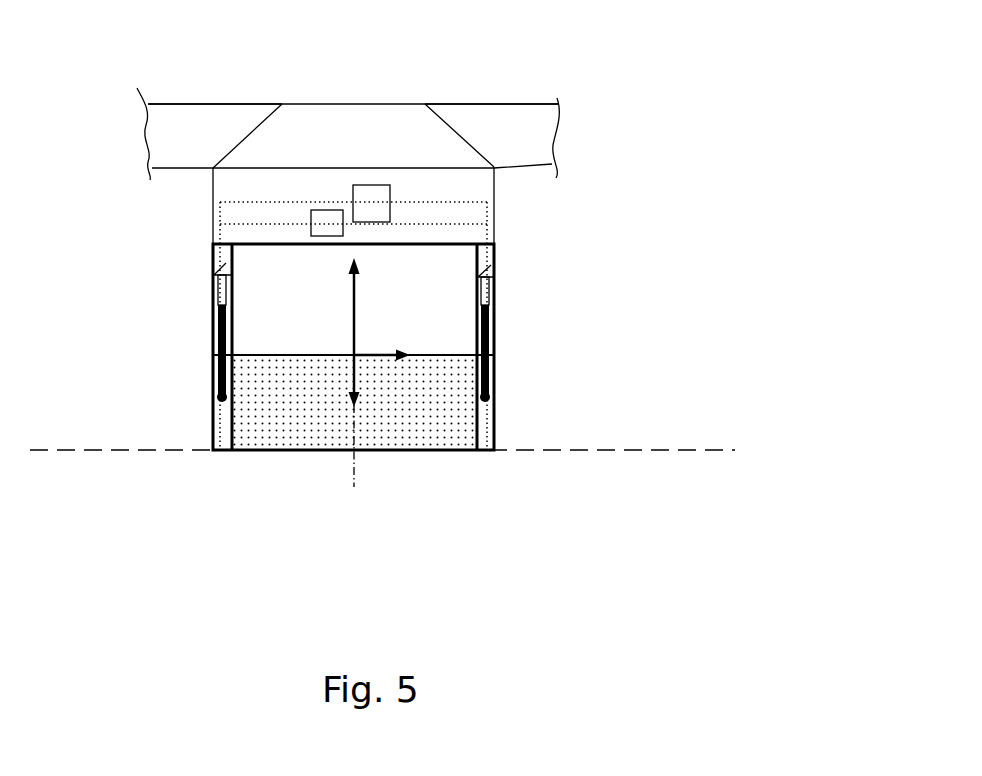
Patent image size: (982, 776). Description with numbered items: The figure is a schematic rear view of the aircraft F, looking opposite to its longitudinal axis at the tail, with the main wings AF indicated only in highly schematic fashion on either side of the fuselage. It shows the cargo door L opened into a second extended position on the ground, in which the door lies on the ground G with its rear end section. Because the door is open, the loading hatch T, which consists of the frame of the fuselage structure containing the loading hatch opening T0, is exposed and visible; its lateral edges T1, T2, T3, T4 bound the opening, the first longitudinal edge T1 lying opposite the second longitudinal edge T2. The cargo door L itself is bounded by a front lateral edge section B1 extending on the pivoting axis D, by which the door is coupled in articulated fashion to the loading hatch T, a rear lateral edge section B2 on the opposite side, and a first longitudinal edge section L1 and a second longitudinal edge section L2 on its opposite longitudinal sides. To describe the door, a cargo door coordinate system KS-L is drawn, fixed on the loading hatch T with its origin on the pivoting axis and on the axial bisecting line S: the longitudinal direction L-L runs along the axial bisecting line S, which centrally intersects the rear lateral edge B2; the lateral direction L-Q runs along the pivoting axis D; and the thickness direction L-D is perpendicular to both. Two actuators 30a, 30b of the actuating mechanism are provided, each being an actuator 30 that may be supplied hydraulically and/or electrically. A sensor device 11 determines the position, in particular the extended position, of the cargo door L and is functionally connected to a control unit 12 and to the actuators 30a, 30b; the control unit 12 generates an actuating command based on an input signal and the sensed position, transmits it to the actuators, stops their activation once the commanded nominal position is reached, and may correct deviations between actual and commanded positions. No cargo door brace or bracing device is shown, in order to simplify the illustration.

The aircraft F is at (571, 68).
The airfoil AF is at (216, 116).
The sensor device 11 is at (320, 218).
The control unit 12 is at (363, 192).
The loading hatch T is at (458, 292).
The loading hatch opening T0 is at (418, 256).
The first longitudinal edge of the loading hatch T1 is at (495, 212).
The second longitudinal edge of the loading hatch T2 is at (445, 355).
The lateral edge of the loading hatch T3 is at (213, 250).
The lateral edge of the loading hatch T4 is at (478, 255).
The actuator 30 is at (203, 345).
The first actuator 30a is at (213, 370).
The second actuator 30b is at (494, 340).
The front lateral edge section B1 is at (300, 355).
The rear lateral edge section B2 is at (450, 452).
The cargo door coordinate system KS-L is at (336, 310).
The thickness direction L-D is at (375, 306).
The lateral direction L-Q is at (382, 346).
The longitudinal direction L-L is at (333, 382).
The axial bisecting line S is at (352, 465).
The pivoting axis D is at (265, 355).
The ground line G is at (93, 452).
The cargo door L is at (226, 465).
The first longitudinal edge section L1 is at (212, 438).
The second longitudinal edge section L2 is at (497, 418).